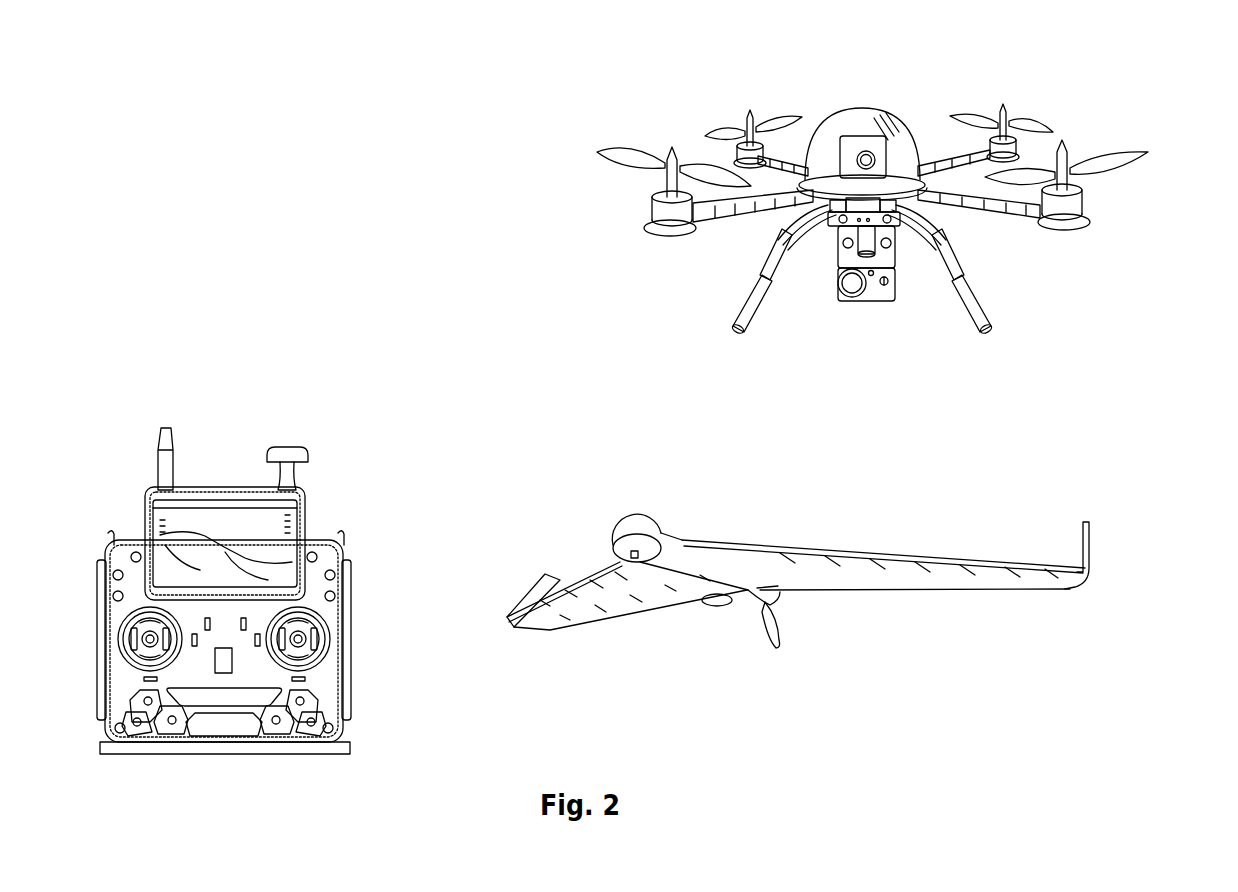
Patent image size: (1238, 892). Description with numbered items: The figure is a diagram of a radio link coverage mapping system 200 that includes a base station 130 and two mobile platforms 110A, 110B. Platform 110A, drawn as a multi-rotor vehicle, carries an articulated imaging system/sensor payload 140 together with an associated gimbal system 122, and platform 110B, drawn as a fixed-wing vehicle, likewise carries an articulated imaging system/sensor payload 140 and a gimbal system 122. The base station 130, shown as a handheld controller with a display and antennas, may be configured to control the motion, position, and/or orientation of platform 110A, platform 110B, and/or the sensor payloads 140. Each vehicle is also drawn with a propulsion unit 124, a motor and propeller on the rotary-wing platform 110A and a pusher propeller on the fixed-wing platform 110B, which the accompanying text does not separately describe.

The radio link coverage mapping system 200 is at (246, 106).
The platform 110A is at (680, 80).
The platform 110B is at (576, 640).
The gimbal system 122 is at (820, 259).
The propulsion unit (motor / propeller) 124 is at (1082, 192).
The imaging system/sensor payload 140 is at (852, 290).
The base station 130 is at (350, 456).